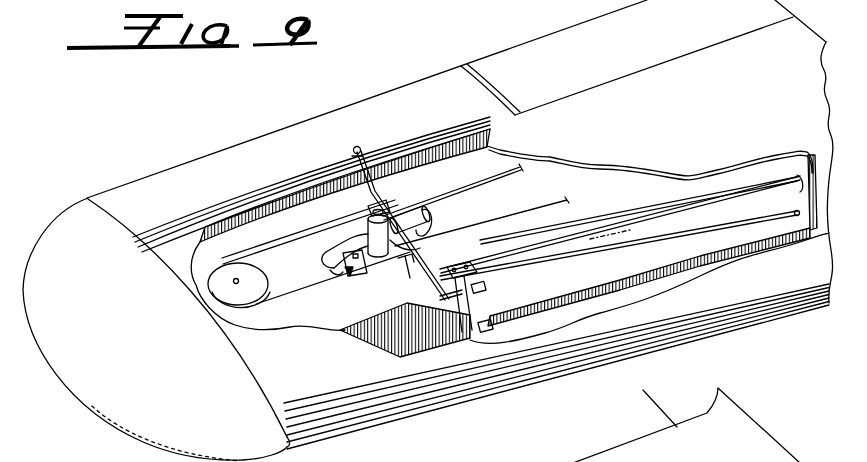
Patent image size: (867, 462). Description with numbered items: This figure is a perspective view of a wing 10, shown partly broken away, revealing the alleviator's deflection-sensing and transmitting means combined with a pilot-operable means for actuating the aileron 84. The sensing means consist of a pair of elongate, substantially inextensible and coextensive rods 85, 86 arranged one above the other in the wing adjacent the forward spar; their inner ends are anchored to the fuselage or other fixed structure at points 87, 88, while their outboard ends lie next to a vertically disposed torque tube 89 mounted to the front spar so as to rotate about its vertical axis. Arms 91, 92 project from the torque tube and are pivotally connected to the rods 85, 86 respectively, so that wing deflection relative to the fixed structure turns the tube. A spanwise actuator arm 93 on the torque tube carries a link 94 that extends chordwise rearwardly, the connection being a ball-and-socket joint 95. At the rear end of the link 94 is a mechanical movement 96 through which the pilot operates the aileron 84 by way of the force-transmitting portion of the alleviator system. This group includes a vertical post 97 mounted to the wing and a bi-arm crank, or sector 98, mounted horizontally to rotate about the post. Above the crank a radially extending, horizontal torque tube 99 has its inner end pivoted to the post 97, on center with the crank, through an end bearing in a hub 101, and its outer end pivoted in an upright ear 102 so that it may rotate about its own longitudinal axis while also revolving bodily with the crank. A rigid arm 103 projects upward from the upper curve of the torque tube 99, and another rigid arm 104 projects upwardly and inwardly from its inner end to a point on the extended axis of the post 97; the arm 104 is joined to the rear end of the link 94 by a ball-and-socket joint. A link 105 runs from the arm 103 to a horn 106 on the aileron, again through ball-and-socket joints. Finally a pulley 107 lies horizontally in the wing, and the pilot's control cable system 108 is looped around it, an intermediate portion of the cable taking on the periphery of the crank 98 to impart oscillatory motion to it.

The wing 10 is at (537, 37).
The aileron 84 is at (312, 128).
The rod 85 is at (562, 238).
The rod 86 is at (560, 312).
The anchor point 87 is at (810, 150).
The anchor point 88 is at (795, 220).
The torque tube 89 is at (460, 327).
The arm 91 is at (370, 281).
The arm 92 is at (462, 340).
The actuator arm 93 is at (452, 323).
The link 94 is at (410, 267).
The ball-and-socket joint 95 is at (447, 324).
The mechanical movement 96 is at (357, 275).
The post 97 is at (366, 248).
The crank 98 is at (333, 270).
The torque tube 99 is at (418, 248).
The hub 101 is at (328, 252).
The ear 102 is at (430, 222).
The arm 103 is at (428, 209).
The arm 104 is at (306, 157).
The link 105 is at (393, 157).
The horn 106 is at (355, 150).
The pulley 107 is at (247, 301).
The control cable system 108 is at (255, 248).